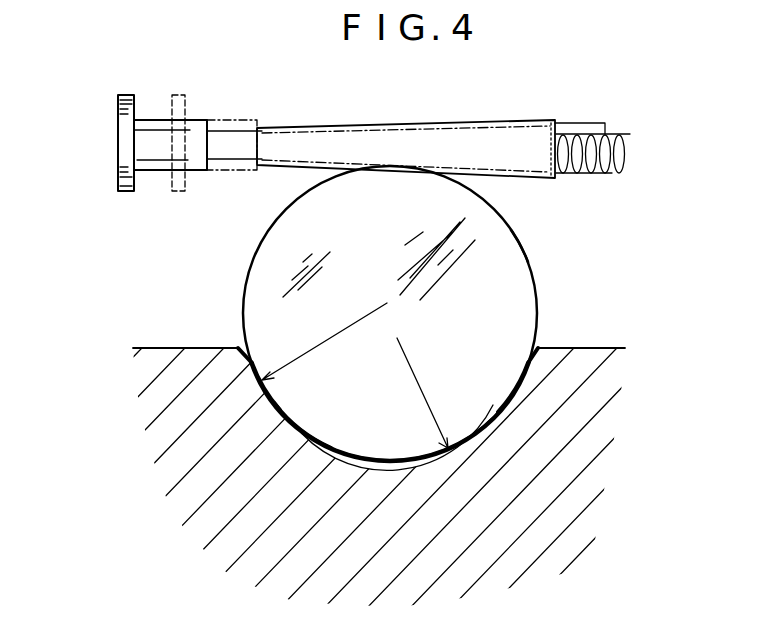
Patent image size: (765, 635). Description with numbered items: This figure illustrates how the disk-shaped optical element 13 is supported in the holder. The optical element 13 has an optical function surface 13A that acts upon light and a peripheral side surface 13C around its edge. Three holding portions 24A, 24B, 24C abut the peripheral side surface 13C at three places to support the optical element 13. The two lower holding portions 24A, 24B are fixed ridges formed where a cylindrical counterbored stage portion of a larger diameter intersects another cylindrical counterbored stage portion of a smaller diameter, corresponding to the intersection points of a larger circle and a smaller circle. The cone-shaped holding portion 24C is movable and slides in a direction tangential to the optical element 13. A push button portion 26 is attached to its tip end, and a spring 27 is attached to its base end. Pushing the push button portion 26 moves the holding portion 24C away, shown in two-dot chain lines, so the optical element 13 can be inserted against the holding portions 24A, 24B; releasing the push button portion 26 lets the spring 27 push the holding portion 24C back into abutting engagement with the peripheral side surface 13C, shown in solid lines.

The optical element 13 is at (262, 225).
The optical function surface 13A is at (504, 238).
The peripheral side surface 13C is at (245, 306).
The holding portion 24A is at (499, 412).
The holding portion 24B is at (278, 407).
The holding portion 24C is at (400, 123).
The push button portion 26 is at (117, 158).
The spring 27 is at (628, 151).